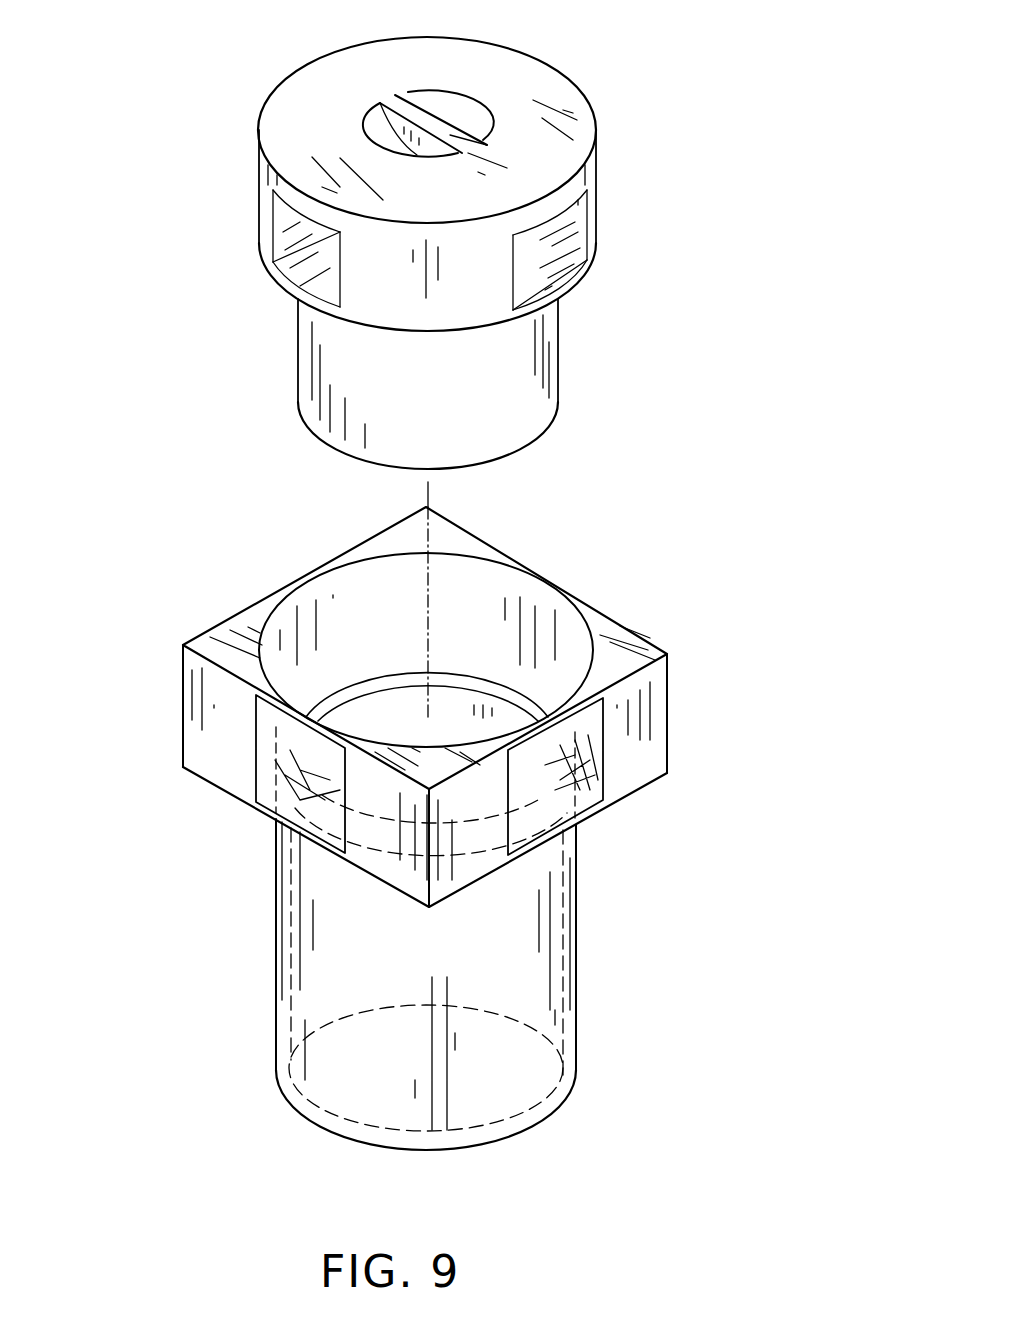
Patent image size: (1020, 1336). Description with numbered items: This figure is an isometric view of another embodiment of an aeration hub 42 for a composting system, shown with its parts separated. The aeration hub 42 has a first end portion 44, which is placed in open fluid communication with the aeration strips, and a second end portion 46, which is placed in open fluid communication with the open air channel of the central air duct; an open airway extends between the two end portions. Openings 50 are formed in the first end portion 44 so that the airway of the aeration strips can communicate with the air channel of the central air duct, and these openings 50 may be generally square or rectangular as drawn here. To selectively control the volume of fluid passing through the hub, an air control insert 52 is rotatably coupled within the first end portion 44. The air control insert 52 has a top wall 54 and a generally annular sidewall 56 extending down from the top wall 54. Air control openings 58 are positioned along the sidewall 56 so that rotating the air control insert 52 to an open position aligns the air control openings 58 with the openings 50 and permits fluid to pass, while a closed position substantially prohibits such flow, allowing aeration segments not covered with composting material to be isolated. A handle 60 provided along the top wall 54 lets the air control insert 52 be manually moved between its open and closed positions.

The aeration hub 42 is at (421, 828).
The first end portion 44 is at (655, 698).
The second end portion 46 is at (557, 1087).
The openings 50 is at (273, 735).
The air control insert 52 is at (493, 282).
The top wall 54 is at (553, 143).
The sidewall 56 is at (485, 298).
The air control openings 58 is at (533, 262).
The handle 60 is at (440, 120).